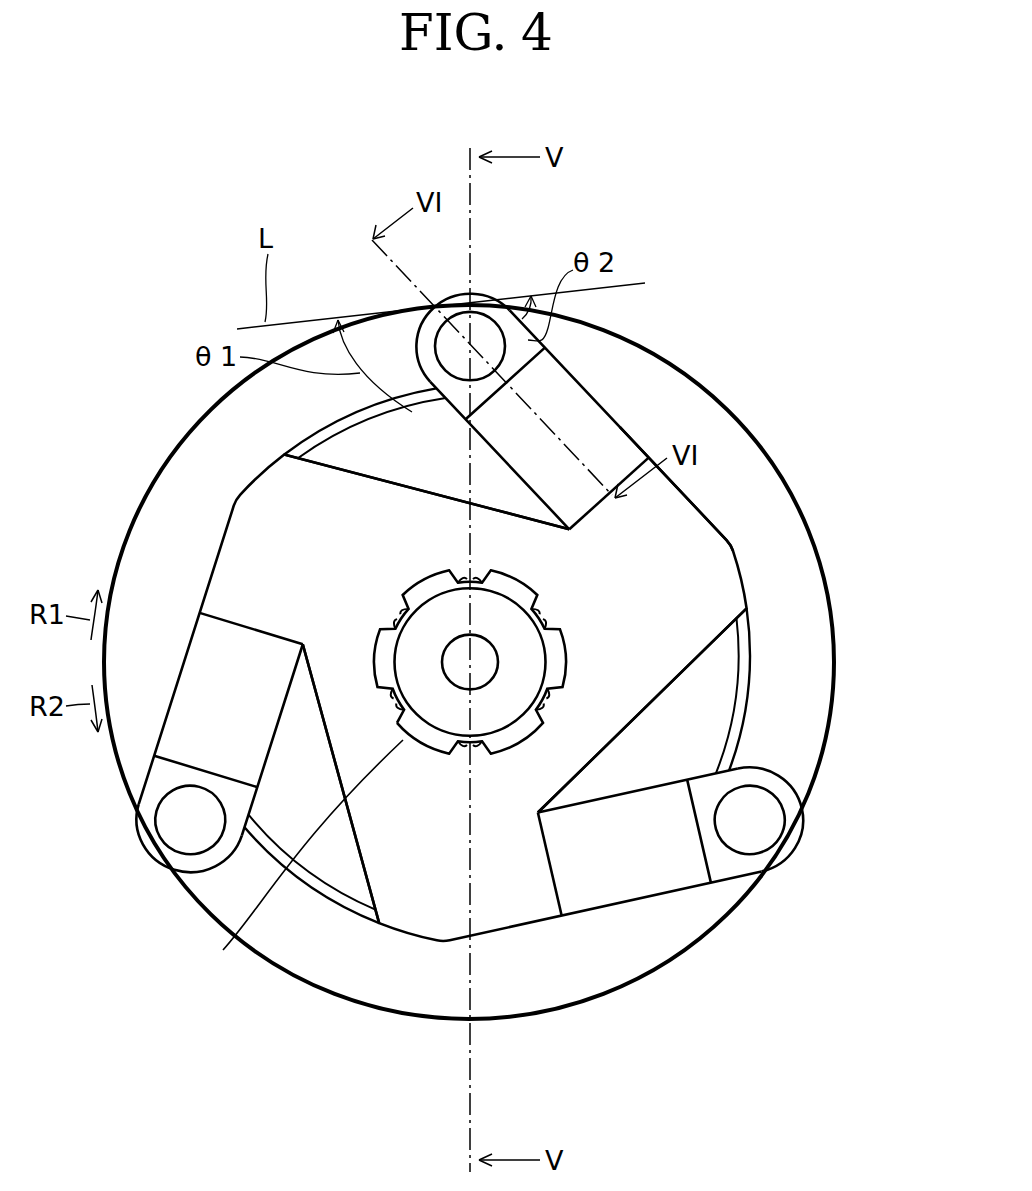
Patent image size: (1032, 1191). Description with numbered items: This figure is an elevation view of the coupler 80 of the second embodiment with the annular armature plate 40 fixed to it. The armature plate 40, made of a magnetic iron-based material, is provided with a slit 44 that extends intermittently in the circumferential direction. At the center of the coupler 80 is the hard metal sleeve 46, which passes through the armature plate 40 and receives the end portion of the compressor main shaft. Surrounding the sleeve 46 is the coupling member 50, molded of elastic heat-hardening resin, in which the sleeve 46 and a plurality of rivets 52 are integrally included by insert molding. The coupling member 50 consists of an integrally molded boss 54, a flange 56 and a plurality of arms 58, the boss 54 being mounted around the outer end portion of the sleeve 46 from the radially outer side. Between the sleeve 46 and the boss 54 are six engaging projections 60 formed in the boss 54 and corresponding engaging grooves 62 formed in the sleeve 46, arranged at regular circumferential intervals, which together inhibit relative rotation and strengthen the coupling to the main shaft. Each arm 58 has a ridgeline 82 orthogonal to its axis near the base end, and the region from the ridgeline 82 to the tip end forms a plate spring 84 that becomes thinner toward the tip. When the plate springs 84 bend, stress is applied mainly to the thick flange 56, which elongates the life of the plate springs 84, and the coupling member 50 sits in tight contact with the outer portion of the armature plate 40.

The armature plate 40 is at (790, 560).
The slit 44 is at (340, 897).
The sleeve 46 is at (430, 740).
The coupling member 50 is at (691, 666).
The rivet 52 is at (468, 343).
The boss 54 is at (238, 937).
The flange 56 is at (712, 644).
The arm 58 is at (672, 512).
The engaging projection 60 is at (460, 580).
The engaging groove 62 is at (480, 578).
The coupler 80 is at (724, 528).
The ridgeline 82 is at (622, 480).
The plate spring 84 is at (580, 404).